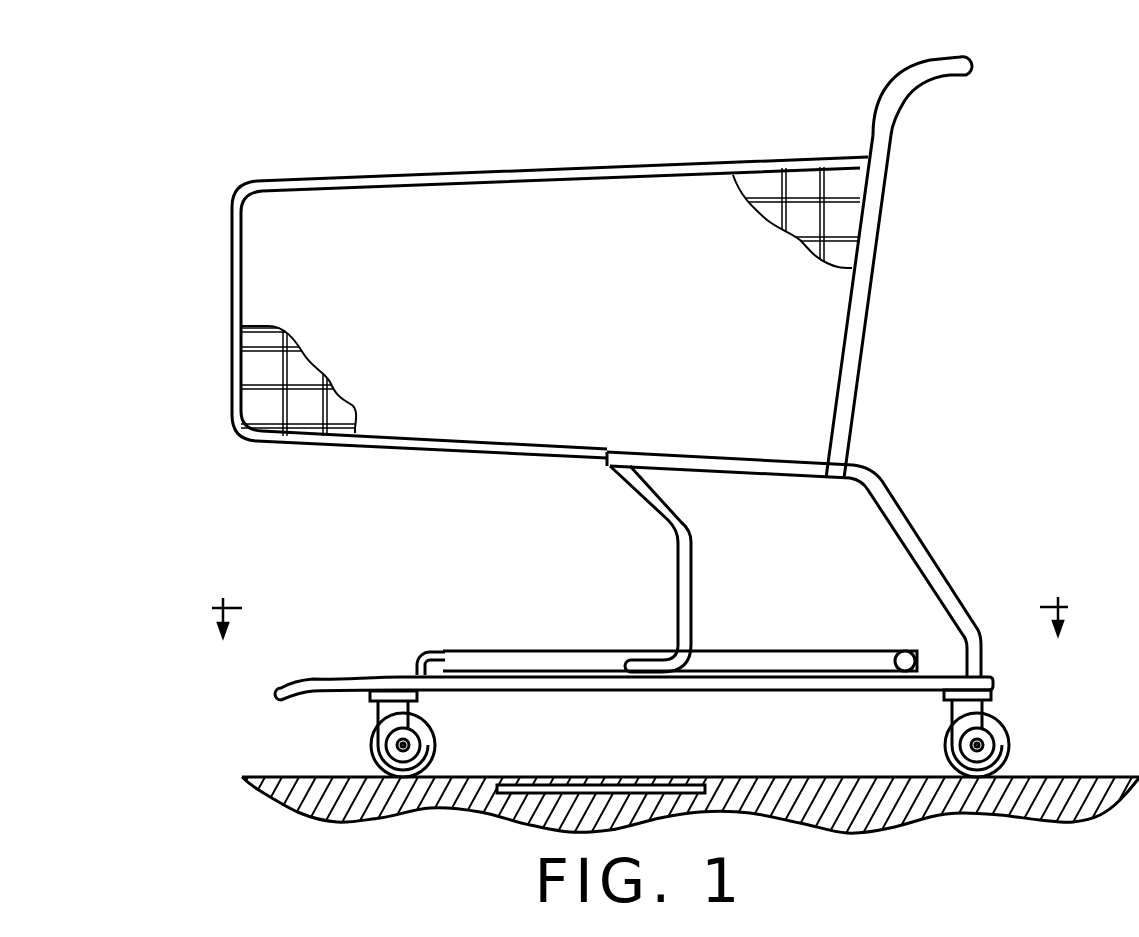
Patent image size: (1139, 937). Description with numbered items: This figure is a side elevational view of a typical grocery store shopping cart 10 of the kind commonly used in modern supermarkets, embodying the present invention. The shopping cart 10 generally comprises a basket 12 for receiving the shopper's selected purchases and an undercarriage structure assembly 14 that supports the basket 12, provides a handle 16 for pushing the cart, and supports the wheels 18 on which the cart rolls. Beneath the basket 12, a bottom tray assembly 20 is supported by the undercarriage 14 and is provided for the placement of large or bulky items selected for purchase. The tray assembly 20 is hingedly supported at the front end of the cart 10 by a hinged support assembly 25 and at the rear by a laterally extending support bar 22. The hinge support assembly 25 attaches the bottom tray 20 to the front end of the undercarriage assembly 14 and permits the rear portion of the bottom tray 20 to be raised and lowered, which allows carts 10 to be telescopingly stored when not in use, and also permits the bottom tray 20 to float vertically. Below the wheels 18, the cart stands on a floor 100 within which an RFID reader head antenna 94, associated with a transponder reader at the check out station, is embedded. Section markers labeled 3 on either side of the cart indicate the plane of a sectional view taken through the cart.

The shopping cart 10 is at (743, 90).
The basket 12 is at (383, 183).
The undercarriage structure assembly 14 is at (945, 512).
The handle 16 is at (913, 95).
The wheels 18 is at (437, 745).
The bottom tray assembly 20 is at (769, 620).
The laterally extending support bar 22 is at (913, 650).
The hinged support assembly 25 is at (409, 640).
The reader head antenna 94 is at (618, 777).
The floor 100 is at (820, 800).
The section line 3- 3 is at (639, 613).